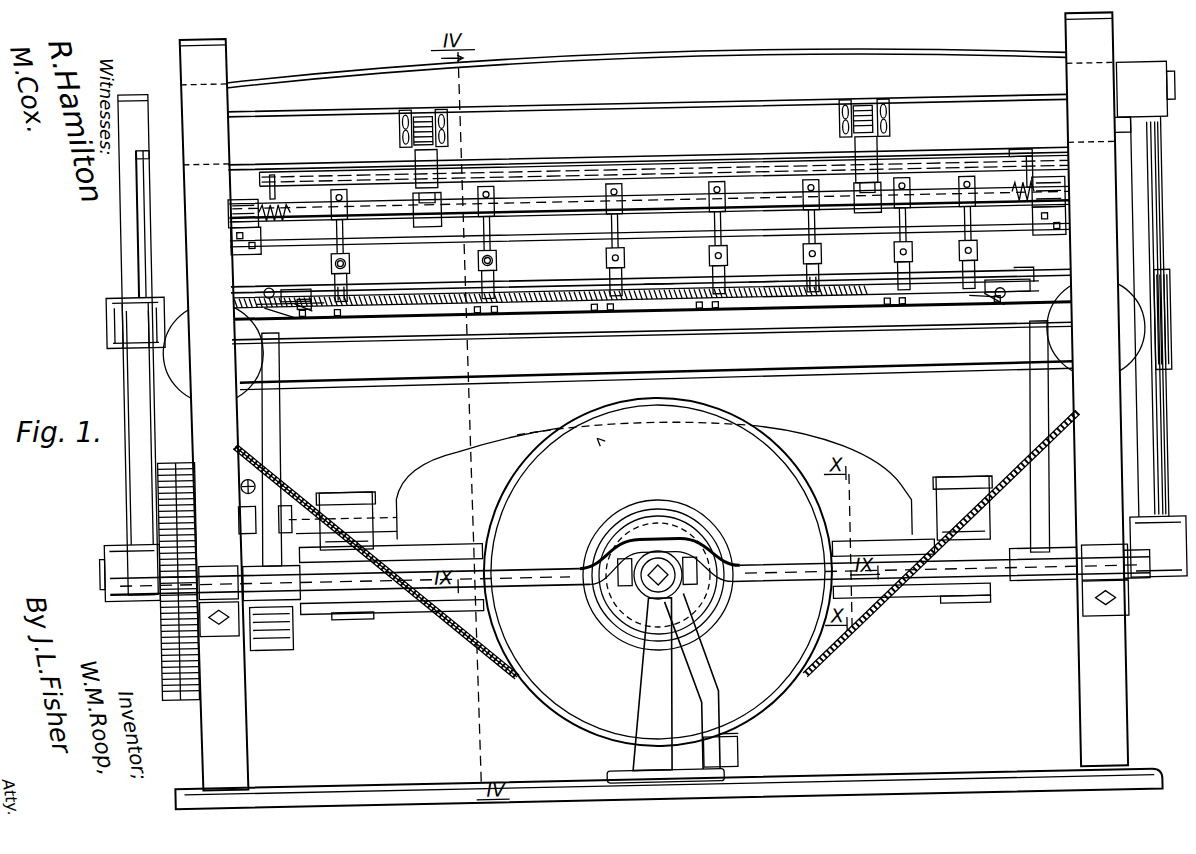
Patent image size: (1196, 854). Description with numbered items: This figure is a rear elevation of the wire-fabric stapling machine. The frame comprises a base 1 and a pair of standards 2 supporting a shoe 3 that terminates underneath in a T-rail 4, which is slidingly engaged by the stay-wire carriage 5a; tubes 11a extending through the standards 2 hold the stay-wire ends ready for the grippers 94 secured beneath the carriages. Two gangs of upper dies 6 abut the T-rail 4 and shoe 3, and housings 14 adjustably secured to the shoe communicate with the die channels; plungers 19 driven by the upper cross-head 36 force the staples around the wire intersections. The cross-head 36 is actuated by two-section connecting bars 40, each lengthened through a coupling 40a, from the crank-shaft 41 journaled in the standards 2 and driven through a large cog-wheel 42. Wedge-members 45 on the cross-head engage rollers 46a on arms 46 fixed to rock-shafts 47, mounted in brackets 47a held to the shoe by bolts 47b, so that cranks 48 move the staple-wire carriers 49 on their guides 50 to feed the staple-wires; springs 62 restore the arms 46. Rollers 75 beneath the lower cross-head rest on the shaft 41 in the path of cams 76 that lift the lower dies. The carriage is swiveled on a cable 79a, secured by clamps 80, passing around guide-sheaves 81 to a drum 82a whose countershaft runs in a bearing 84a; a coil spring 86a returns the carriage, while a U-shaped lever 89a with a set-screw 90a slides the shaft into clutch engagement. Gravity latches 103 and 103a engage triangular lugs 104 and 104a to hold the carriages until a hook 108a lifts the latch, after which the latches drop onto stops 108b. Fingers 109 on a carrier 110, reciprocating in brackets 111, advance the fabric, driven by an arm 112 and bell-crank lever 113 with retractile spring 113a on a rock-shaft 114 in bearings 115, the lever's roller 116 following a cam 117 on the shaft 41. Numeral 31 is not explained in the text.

The base 1 is at (330, 780).
The standards 2 is at (654, 401).
The shoe 3 is at (658, 265).
The T-rail 4 is at (760, 283).
The carriage 5a is at (262, 300).
The upper dies 6 is at (470, 282).
The tubes 11a is at (138, 272).
The housings 14 is at (600, 268).
The plungers 19 is at (590, 228).
The cross beam 31 is at (663, 178).
The cross-head 36 is at (647, 106).
The connecting bars 40 is at (126, 254).
The coupling 40a is at (110, 360).
The crank-shaft 41 is at (912, 598).
The cog-wheel 42 is at (162, 627).
The wedge-members 45 is at (432, 112).
The arms 46 is at (420, 186).
The rollers 46a is at (930, 144).
The rock-shafts 47 is at (560, 203).
The brackets 47a is at (236, 205).
The bolts 47b is at (240, 232).
The cranks 48 is at (618, 185).
The staple-wire carriers 49 is at (486, 262).
The guides 50 is at (354, 266).
The springs 62 is at (282, 167).
The rollers 75 is at (350, 486).
The cams 76 is at (355, 613).
The cable 79a is at (455, 630).
The clamps 80 is at (305, 302).
The guide-sheaves 81 is at (170, 342).
The drum 82a is at (655, 572).
The bearing 84a is at (640, 672).
The coil spring 86a is at (600, 612).
The U-shaped lever 89a is at (718, 672).
The set-screw 90a is at (645, 565).
The grippers 94 is at (312, 297).
The gravity latch 103 is at (305, 282).
The gravity latch 103a is at (1000, 305).
The triangular lug 104 is at (996, 287).
The triangular lug 104a is at (276, 280).
The hook 108a is at (1032, 277).
The stops 108b is at (996, 306).
The fingers 109 is at (705, 311).
The carrier 110 is at (745, 336).
The brackets 111 is at (661, 458).
The arm 112 is at (1035, 412).
The bell-crank lever 113 is at (285, 425).
The retractile spring 113a is at (262, 472).
The rock-shaft 114 is at (438, 528).
The bearings 115 is at (664, 590).
The roller 116 is at (293, 500).
The cam 117 is at (272, 642).